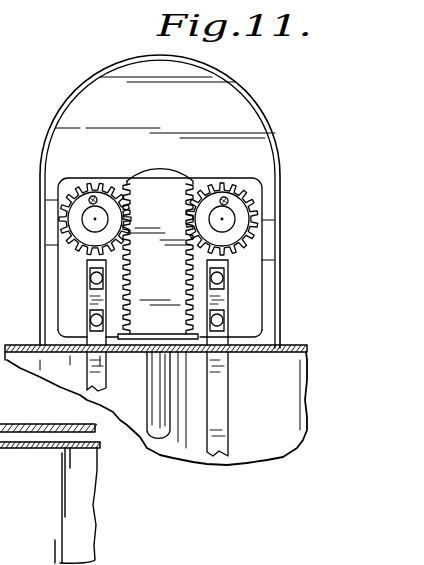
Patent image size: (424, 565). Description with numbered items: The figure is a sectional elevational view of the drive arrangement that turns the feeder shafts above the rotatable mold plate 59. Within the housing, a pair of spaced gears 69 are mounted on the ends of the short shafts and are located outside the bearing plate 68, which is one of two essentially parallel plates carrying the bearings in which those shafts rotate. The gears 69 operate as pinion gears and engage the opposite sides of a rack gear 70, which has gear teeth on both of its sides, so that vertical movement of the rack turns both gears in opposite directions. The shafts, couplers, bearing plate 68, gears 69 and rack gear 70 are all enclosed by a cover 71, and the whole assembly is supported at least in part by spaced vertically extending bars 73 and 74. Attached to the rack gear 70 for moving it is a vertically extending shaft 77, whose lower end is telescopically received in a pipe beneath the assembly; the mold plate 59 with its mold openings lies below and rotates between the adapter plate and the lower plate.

The rotatable mold plate 59 is at (10, 421).
The bearing plate 68 is at (64, 180).
The gears 69 is at (112, 181).
The rack gear 70 is at (160, 205).
The cover 71 is at (197, 92).
The vertically extending bar 73 is at (221, 389).
The vertically extending bar 74 is at (96, 373).
The vertically extending shaft 77 is at (156, 380).